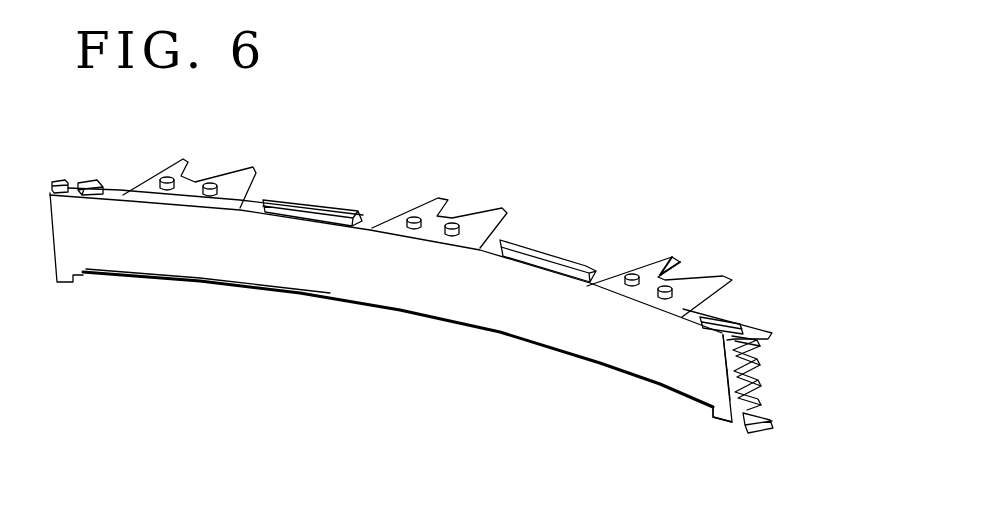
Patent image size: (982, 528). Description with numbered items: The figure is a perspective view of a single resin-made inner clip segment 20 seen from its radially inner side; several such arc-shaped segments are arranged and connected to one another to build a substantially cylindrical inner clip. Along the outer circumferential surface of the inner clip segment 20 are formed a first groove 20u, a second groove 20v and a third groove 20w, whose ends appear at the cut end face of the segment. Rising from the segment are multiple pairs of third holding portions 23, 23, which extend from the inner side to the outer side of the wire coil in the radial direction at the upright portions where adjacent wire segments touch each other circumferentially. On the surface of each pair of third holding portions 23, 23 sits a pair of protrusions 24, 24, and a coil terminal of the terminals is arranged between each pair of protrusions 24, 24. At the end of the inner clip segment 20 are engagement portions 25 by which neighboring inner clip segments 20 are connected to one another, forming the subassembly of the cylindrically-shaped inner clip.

The inner clip segment 20 is at (388, 332).
The first groove 20u is at (728, 348).
The second groove 20v is at (728, 378).
The third groove 20w is at (715, 414).
The third holding portion 23 is at (438, 199).
The protrusion 24 is at (413, 216).
The engagement portion 25 is at (762, 328).